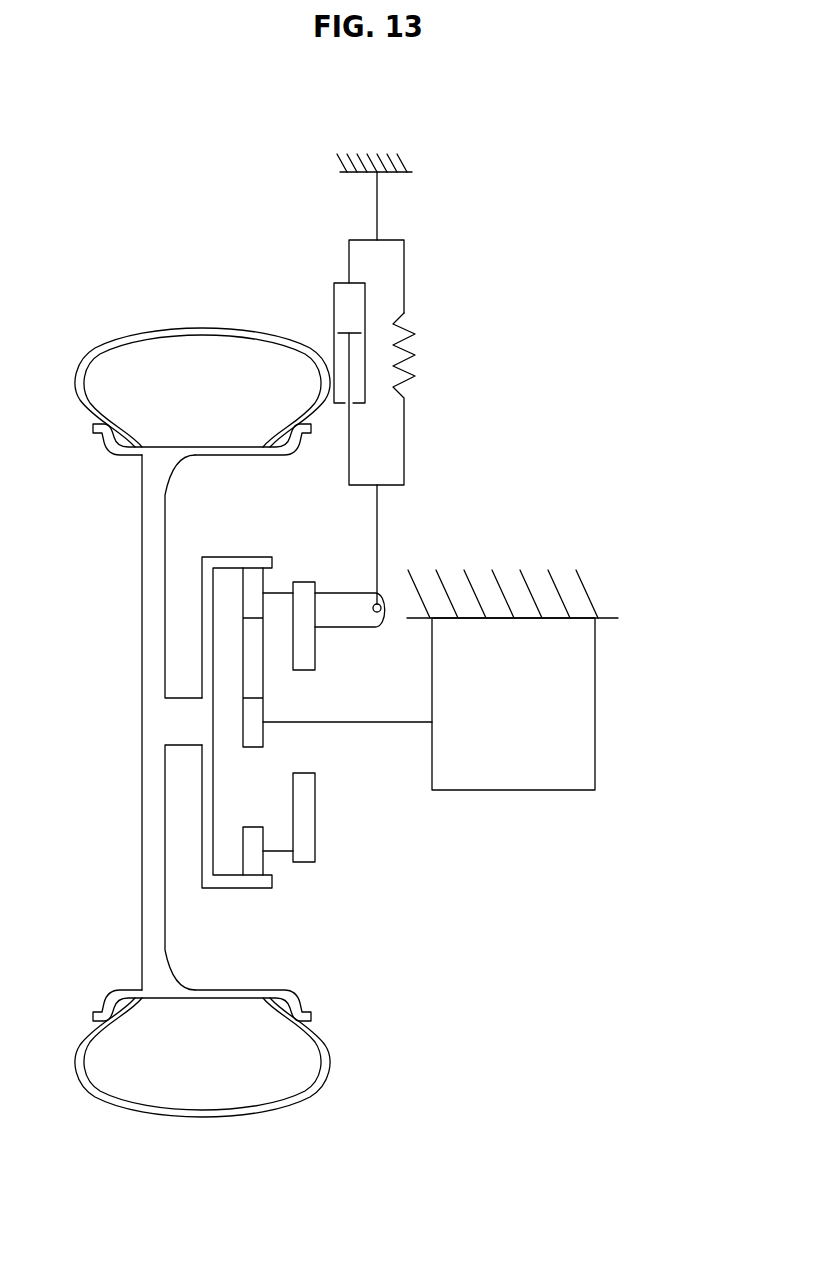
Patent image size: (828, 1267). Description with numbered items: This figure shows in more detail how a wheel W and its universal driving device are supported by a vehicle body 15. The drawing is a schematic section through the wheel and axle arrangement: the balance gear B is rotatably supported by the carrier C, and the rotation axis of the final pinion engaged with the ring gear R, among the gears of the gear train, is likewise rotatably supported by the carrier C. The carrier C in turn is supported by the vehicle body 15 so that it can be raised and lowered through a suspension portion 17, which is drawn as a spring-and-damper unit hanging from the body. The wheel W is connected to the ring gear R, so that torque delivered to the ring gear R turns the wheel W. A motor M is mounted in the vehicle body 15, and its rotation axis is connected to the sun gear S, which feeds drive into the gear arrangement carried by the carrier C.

The wheel W is at (152, 330).
The suspension portion 17 is at (322, 293).
The vehicle body 15 is at (405, 161).
The motor M is at (583, 712).
The sun gear S is at (252, 718).
The carrier C is at (308, 662).
The balance gear B is at (258, 863).
The ring gear R is at (262, 883).